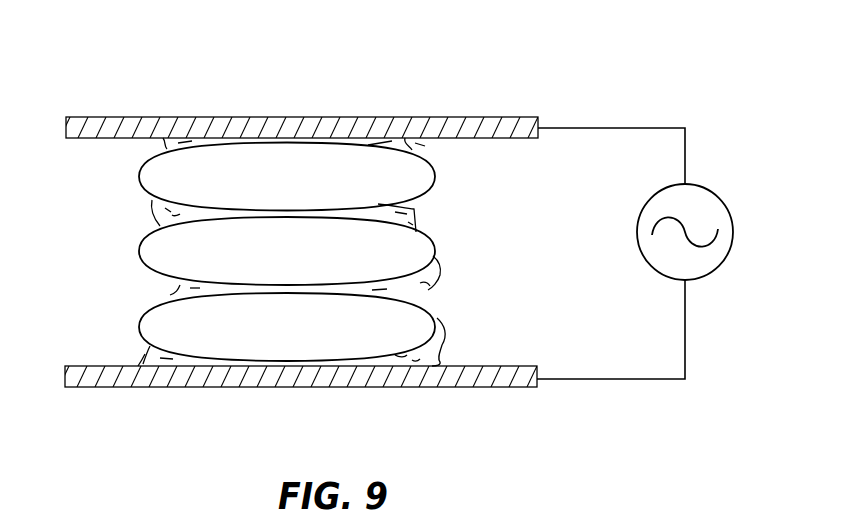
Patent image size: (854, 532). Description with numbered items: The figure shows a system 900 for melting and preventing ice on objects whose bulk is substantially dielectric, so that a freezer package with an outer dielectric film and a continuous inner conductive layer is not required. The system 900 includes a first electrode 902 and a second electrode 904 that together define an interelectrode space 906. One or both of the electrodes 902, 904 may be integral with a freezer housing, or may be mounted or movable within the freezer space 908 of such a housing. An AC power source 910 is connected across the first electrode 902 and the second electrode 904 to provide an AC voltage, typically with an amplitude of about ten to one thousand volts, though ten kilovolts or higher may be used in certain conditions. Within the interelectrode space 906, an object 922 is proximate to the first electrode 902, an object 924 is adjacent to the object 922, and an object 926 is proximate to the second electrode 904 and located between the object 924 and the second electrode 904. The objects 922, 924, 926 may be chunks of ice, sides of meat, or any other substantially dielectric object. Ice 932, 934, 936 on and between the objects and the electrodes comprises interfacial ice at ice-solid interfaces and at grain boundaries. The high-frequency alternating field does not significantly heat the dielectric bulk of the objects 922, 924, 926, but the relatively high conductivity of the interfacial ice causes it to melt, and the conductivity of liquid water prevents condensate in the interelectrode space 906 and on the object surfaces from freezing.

The system 900 is at (112, 63).
The first electrode 902 is at (453, 117).
The second electrode 904 is at (458, 388).
The interelectrode space 906 is at (550, 189).
The freezer space 908 is at (314, 70).
The AC power source 910 is at (733, 224).
The object 922 is at (314, 188).
The object 924 is at (314, 263).
The object 926 is at (314, 342).
The ice 932 is at (150, 145).
The ice 934 is at (411, 214).
The ice 936 is at (438, 258).